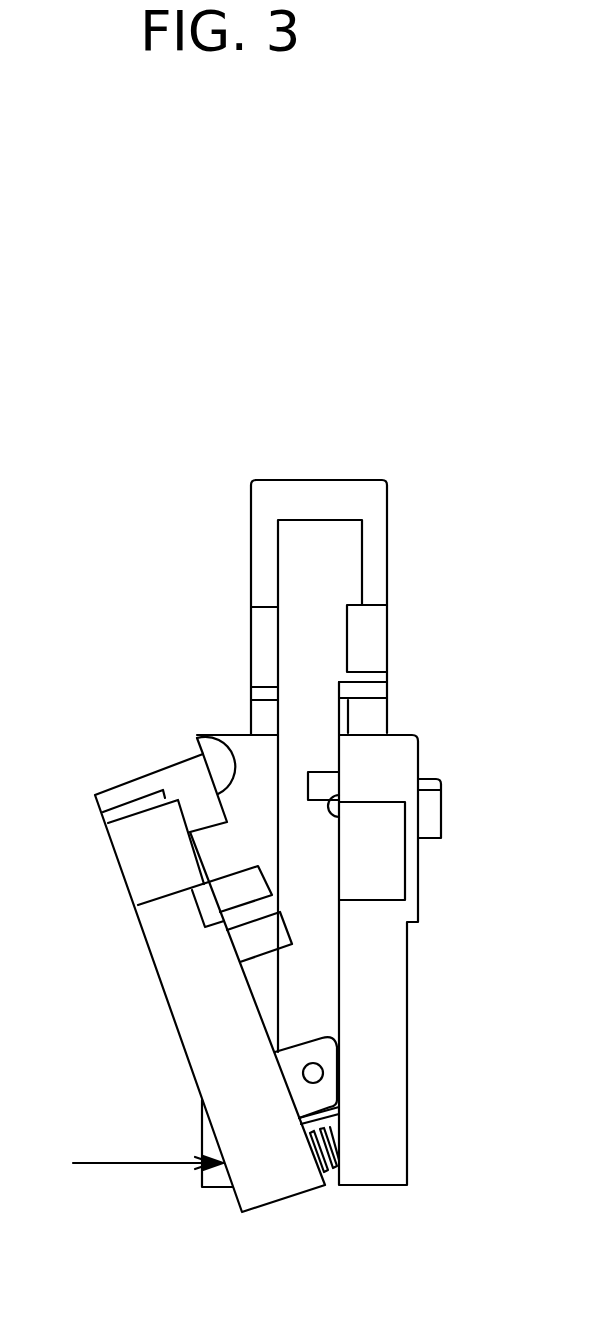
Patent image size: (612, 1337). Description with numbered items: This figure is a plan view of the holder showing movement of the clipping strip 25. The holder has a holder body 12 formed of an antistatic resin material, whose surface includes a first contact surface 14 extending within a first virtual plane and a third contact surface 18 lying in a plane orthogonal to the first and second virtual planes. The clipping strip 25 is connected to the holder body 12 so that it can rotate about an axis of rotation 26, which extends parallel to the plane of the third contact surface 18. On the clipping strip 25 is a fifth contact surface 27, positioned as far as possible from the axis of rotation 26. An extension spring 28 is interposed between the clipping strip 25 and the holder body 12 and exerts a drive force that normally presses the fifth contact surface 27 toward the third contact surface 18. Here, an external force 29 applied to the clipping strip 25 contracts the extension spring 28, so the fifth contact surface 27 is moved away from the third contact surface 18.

The holder body 12 is at (408, 986).
The first contact surface 14 is at (375, 550).
The third contact surface 18 is at (327, 792).
The clipping strip 25 is at (138, 932).
The axis of rotation 26 is at (323, 1073).
The fifth contact surface 27 is at (197, 738).
The extension spring 28 is at (337, 1178).
The external force 29 is at (103, 1165).